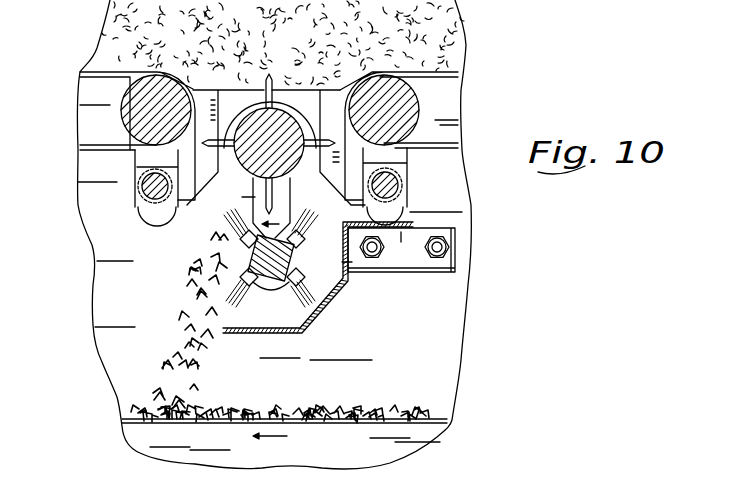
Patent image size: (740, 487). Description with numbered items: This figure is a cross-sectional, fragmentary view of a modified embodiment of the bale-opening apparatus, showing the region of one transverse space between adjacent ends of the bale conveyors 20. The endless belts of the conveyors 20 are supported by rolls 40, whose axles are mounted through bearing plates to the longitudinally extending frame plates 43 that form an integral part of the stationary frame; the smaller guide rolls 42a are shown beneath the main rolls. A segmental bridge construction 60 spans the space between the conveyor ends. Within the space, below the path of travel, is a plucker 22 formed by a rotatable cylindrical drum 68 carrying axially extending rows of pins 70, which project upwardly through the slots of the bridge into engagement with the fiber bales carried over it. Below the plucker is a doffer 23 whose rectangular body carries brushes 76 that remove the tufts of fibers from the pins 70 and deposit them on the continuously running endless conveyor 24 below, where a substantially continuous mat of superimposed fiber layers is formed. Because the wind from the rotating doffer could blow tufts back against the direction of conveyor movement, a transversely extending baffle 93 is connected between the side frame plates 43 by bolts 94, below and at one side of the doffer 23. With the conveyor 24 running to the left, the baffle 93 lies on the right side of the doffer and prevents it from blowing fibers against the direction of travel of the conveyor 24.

The conveyor 20 is at (90, 78).
The roll 40 is at (135, 121).
The guide roller 42a is at (134, 152).
The plucker 22 is at (244, 173).
The cylindrical drum 68 is at (290, 130).
The pins 70 is at (277, 84).
The segmental bridge construction 60 is at (186, 211).
The doffer 23 is at (242, 263).
The brushes 76 is at (297, 296).
The baffle 93 is at (325, 300).
The bolts 94 is at (432, 250).
The frame plates 43 is at (462, 318).
The endless conveyor 24 is at (328, 421).